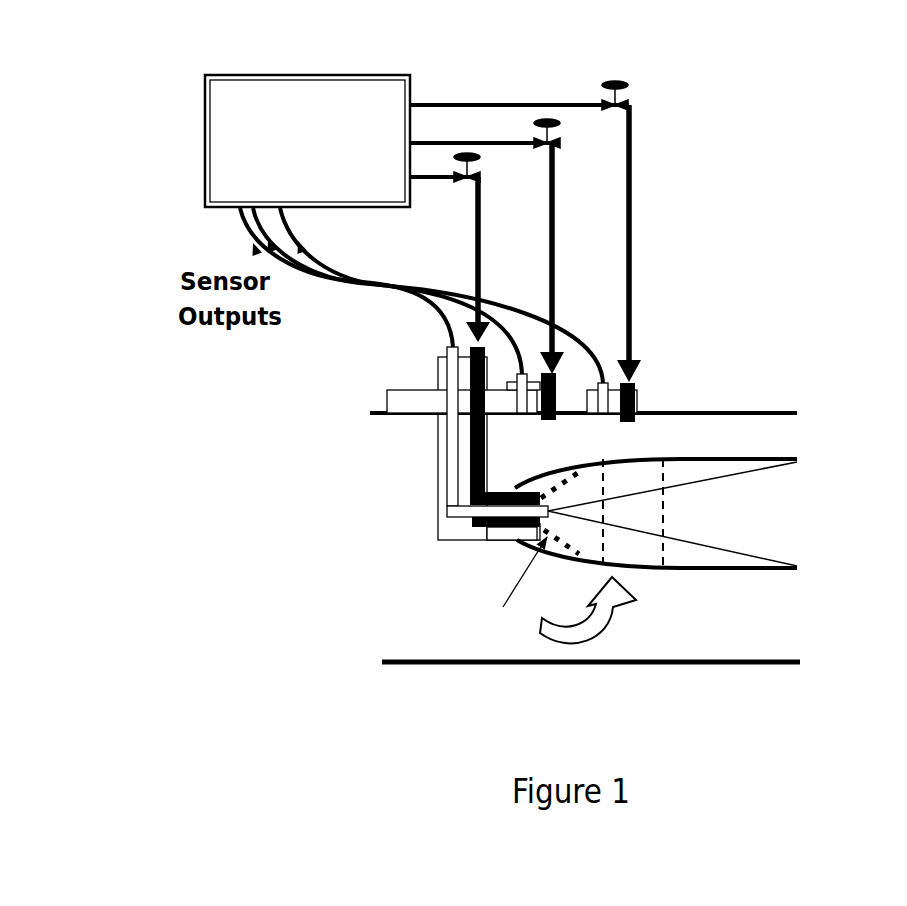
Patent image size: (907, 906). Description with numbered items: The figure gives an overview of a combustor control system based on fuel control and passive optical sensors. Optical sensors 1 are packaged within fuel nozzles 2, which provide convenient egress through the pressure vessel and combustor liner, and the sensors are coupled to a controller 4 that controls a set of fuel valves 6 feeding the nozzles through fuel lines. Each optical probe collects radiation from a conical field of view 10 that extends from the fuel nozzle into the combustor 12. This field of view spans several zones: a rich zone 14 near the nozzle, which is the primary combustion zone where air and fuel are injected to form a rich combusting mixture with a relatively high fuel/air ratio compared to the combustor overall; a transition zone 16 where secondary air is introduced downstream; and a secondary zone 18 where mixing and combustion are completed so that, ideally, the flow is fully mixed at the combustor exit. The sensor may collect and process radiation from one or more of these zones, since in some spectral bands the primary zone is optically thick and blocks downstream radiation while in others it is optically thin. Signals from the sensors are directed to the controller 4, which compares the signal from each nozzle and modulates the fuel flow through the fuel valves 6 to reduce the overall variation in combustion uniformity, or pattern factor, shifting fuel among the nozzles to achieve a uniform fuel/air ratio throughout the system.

The optical sensor 1 is at (455, 498).
The fuel nozzle 2 is at (357, 430).
The controller 4 is at (307, 141).
The fuel valves 6 is at (594, 211).
The field of view 10 is at (695, 514).
The combustor 12 is at (700, 457).
The rich zone 14 is at (590, 487).
The transition zone 16 is at (633, 547).
The secondary zone 18 is at (698, 555).